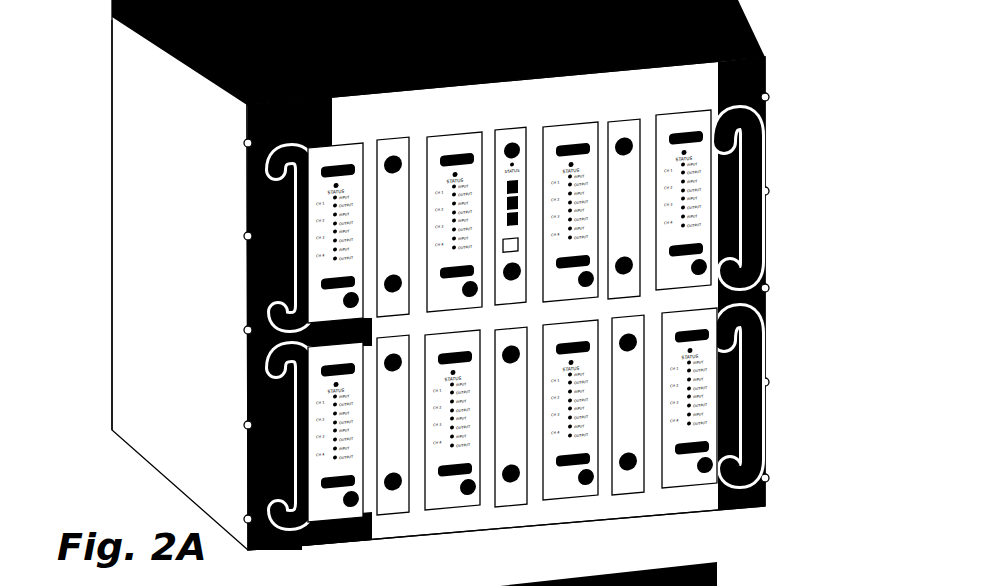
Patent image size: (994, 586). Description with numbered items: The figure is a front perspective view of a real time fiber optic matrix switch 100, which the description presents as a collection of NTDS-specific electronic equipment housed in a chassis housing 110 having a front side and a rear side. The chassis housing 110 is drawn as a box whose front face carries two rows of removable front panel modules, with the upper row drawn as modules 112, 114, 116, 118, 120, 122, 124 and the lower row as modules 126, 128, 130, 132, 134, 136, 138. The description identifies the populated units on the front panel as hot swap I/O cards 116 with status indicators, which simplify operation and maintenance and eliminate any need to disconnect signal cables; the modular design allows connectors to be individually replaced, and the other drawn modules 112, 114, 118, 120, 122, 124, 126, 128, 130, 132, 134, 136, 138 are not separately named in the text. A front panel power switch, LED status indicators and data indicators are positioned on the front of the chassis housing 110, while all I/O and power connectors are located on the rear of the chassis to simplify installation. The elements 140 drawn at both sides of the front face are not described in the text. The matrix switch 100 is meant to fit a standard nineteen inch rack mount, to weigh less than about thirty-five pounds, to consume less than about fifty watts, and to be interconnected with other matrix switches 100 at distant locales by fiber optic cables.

The matrix switch 100 is at (806, 90).
The chassis housing 110 is at (127, 205).
The input/output module 112 is at (666, 113).
The blank module panel 114 is at (615, 121).
The I/O cards 116 is at (556, 125).
The control module 118 is at (502, 129).
The input/output module 120 is at (437, 135).
The blank module panel 122 is at (383, 139).
The input/output module 124 is at (306, 146).
The input/output module 126 is at (707, 478).
The blank module panel 128 is at (633, 487).
The input/output module 130 is at (592, 492).
The blank module panel 132 is at (517, 495).
The input/output module 134 is at (472, 503).
The blank module panel 136 is at (397, 507).
The input/output module 138 is at (338, 508).
The handle 140 is at (250, 198).